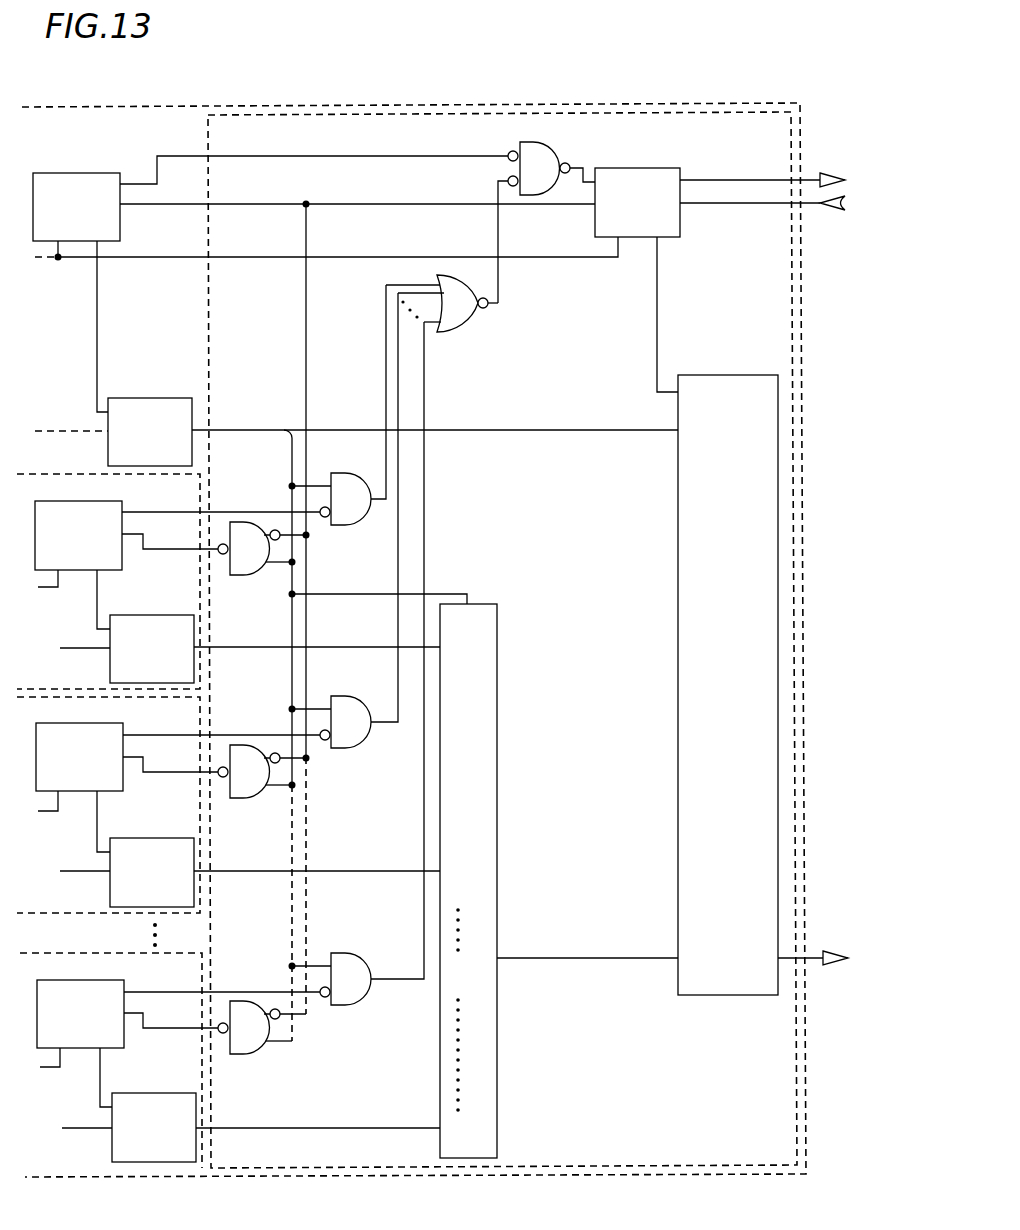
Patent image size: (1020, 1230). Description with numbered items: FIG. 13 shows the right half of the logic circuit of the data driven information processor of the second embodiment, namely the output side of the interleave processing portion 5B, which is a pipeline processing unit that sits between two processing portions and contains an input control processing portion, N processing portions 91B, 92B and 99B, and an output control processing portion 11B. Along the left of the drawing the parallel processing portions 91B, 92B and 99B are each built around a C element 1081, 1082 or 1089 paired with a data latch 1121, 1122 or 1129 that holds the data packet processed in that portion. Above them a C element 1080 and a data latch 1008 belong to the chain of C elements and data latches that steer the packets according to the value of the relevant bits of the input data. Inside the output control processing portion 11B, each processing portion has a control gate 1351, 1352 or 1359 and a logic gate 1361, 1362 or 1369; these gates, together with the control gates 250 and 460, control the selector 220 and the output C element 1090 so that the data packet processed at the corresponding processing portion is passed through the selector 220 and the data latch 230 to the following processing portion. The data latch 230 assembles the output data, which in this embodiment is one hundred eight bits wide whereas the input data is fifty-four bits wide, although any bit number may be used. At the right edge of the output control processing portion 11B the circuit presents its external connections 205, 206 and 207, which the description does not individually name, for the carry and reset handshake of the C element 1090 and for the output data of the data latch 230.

The C element 1080 is at (325, 281).
The C element 1081 is at (177, 553).
The C element 1082 is at (178, 776).
The C element 1089 is at (178, 1032).
The C element 1090 is at (637, 268).
The logic gate 250 is at (546, 211).
The logic gate 460 is at (442, 317).
The data latch 1008 is at (356, 708).
The data latch 1121 is at (250, 637).
The data latch 1122 is at (250, 861).
The data latch 1129 is at (251, 1116).
The control gate 1351 is at (264, 561).
The control gate 1352 is at (264, 784).
The control gate 1359 is at (262, 1041).
The logic gate 1361 is at (338, 417).
The logic gate 1362 is at (344, 533).
The logic gate 1369 is at (357, 675).
The selector 220 is at (484, 869).
The data latch 230 is at (728, 673).
The processing portion 91B is at (35, 476).
The processing portion 92B is at (36, 914).
The processing portion 99B is at (36, 953).
The output control processing portion 11B is at (498, 112).
The interleave processing portion 5B is at (586, 103).
The carry output terminal 205 is at (777, 170).
The reset input terminal 206 is at (777, 213).
The output terminal 207 is at (838, 959).